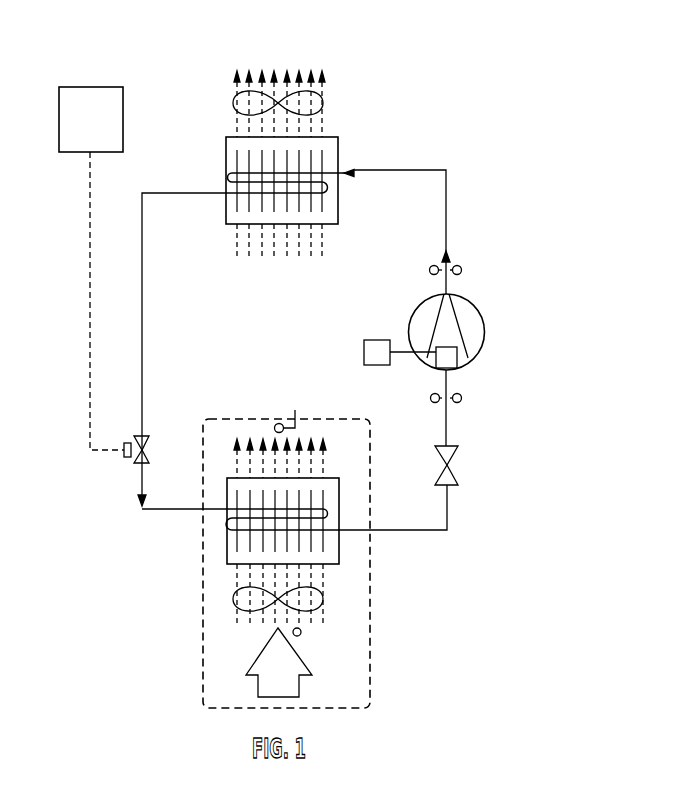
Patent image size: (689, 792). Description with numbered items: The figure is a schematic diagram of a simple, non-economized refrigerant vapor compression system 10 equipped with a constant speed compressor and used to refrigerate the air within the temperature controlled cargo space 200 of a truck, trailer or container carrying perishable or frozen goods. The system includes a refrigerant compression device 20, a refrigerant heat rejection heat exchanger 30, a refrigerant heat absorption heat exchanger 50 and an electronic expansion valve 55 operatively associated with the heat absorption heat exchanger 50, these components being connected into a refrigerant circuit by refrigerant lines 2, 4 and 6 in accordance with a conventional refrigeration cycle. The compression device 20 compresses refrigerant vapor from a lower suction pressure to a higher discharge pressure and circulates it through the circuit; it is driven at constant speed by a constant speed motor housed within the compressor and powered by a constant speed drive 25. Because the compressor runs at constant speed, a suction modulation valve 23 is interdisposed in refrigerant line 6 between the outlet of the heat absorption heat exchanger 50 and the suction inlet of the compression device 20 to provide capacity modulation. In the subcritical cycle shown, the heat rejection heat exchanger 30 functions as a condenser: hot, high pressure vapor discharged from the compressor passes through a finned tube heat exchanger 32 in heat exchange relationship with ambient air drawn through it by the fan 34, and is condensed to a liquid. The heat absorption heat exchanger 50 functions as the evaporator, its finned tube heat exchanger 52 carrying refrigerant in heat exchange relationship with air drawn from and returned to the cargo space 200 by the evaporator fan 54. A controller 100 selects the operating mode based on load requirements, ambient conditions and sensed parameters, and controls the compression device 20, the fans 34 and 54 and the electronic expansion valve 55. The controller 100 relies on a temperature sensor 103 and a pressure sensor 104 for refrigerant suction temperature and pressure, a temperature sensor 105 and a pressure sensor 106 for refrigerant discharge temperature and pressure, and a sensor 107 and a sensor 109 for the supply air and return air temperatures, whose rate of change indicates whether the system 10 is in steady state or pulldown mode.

The refrigerant vapor compression system 10 is at (454, 145).
The refrigerant line 2 is at (410, 170).
The refrigerant line 4 is at (188, 193).
The refrigerant line 6 is at (441, 530).
The refrigerant compression device 20 is at (485, 345).
The suction modulation valve 23 is at (458, 470).
The constant speed drive 25 is at (372, 365).
The refrigerant heat rejection heat exchanger 30 is at (338, 147).
The finned tube heat exchanger 32 is at (328, 187).
The fan 34 is at (323, 102).
The refrigerant heat absorption heat exchanger 50 is at (339, 548).
The finned tube heat exchanger 52 is at (328, 512).
The evaporator fan 54 is at (323, 601).
The electronic expansion valve 55 is at (150, 450).
The controller 100 is at (108, 87).
The temperature sensor 103 is at (430, 398).
The pressure sensor 104 is at (461, 398).
The temperature sensor 105 is at (429, 270).
The pressure sensor 106 is at (461, 270).
The supply air temperature sensor 107 is at (295, 410).
The return air temperature sensor 109 is at (301, 632).
The temperature controlled cargo space 200 is at (370, 658).